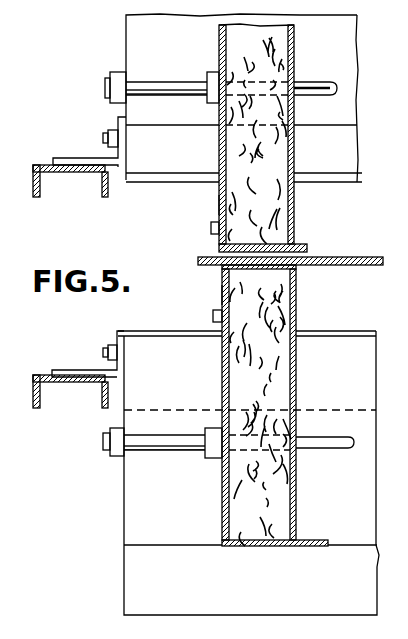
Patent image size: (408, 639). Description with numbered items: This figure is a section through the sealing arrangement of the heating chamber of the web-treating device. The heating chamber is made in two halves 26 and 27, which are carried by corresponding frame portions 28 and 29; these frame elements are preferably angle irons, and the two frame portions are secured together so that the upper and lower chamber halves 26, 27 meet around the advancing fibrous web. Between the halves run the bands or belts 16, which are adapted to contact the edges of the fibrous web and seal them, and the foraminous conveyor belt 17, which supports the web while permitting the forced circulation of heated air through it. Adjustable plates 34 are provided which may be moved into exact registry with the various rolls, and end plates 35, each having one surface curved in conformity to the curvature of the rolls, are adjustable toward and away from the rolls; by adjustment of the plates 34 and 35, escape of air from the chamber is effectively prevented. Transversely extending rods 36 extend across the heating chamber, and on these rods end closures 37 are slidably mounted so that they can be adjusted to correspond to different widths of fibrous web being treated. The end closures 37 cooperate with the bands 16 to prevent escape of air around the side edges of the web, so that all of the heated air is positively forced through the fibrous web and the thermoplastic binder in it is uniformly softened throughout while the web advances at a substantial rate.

The bands or belts 16 is at (306, 251).
The foraminous conveyor belt 17 is at (360, 257).
The heating chamber half 26 is at (126, 43).
The heating chamber half 27 is at (117, 526).
The frame portion 28 is at (43, 185).
The frame portion 29 is at (65, 385).
The adjustable plates 34 is at (145, 330).
The end plates 35 is at (219, 202).
The transversely extending rods 36 is at (169, 81).
The end closures 37 is at (303, 74).